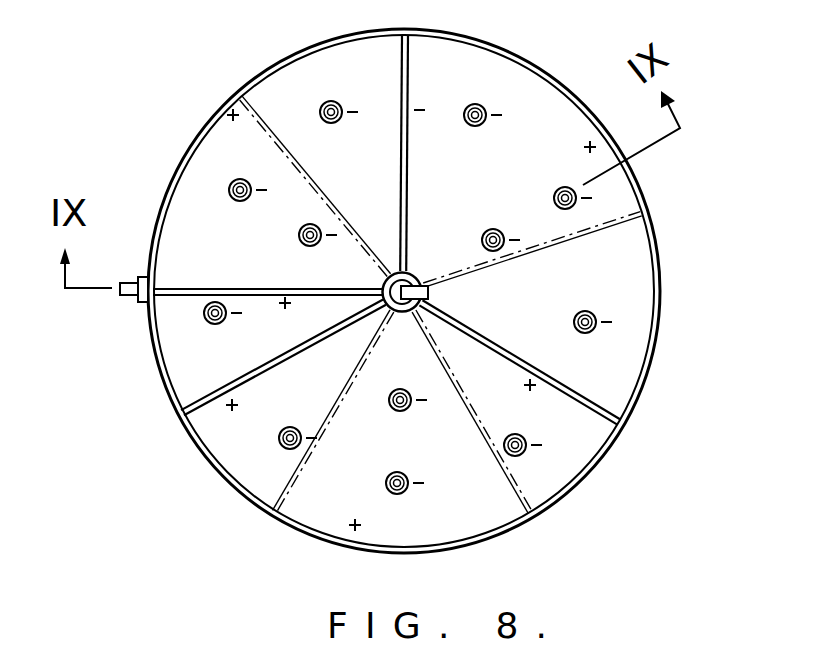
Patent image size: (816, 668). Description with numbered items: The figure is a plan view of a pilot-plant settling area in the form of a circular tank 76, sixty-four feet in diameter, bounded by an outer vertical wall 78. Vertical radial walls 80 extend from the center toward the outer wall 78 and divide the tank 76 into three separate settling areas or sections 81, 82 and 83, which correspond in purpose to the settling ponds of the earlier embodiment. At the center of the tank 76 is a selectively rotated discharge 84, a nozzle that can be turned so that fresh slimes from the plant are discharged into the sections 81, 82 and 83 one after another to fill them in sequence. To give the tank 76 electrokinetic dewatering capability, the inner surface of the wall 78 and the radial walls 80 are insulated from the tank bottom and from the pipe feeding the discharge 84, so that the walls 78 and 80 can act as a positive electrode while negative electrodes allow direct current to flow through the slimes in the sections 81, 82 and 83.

The tank 76 is at (505, 48).
The vertical wall 78 is at (661, 300).
The vertical radial walls 80 is at (410, 167).
The settling section 81 is at (529, 276).
The settling section 82 is at (445, 412).
The settling section 83 is at (299, 176).
The selectively rotated discharge 84 is at (424, 280).